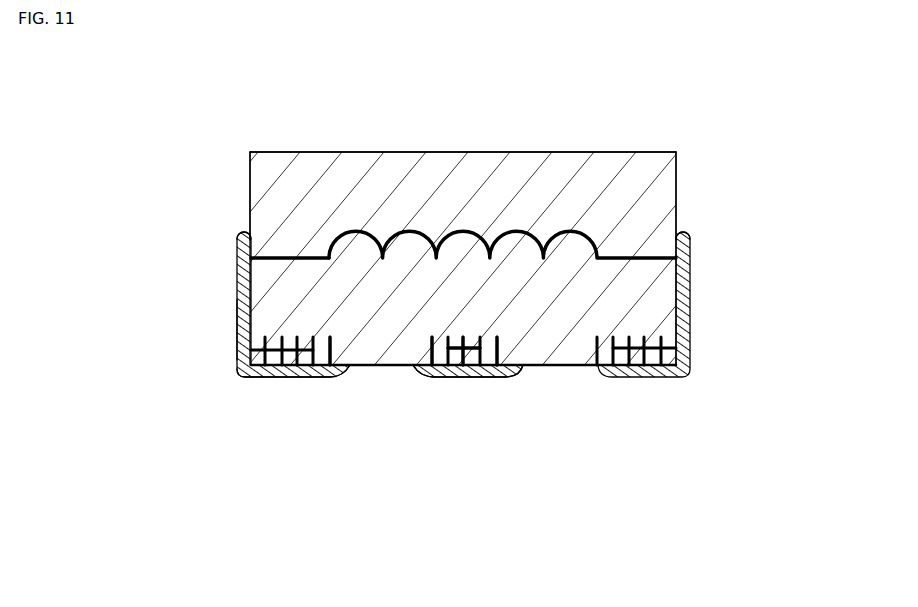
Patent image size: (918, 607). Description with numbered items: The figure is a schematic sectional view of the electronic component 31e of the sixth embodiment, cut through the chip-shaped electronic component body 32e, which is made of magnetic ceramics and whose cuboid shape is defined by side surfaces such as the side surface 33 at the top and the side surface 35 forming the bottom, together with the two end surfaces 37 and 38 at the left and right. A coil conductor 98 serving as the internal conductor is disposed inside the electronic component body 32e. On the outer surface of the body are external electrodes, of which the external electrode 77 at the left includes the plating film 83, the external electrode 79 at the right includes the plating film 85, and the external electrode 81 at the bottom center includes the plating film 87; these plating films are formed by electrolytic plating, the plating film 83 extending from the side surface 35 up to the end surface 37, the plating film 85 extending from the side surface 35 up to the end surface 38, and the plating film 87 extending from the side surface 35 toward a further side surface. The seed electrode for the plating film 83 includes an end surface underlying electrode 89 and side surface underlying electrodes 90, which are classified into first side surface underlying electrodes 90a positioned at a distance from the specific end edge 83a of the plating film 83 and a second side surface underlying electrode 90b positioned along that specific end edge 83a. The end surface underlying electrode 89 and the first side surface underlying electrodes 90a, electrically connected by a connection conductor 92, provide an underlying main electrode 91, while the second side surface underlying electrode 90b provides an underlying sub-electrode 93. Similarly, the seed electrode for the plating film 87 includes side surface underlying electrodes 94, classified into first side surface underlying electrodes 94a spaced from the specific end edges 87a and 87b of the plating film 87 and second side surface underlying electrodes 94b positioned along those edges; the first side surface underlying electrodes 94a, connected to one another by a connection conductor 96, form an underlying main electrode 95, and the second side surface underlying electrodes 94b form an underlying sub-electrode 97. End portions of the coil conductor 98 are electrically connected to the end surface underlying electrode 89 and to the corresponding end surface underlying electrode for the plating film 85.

The electronic component 31e is at (353, 66).
The electronic component body 32e is at (558, 150).
The side surface 33 is at (383, 152).
The side surface 35 is at (388, 368).
The end surface 37 is at (250, 176).
The end surface 38 is at (677, 172).
The external electrode 77 is at (237, 243).
The external electrode 79 is at (689, 240).
The external electrode 81 is at (457, 381).
The plating film 83 is at (243, 282).
The specific end edge 83a is at (332, 372).
The plating film 85 is at (689, 283).
The plating film 87 is at (482, 370).
The specific end edge 87a is at (418, 367).
The specific end edge 87b is at (503, 366).
The end surface underlying electrode 89 is at (239, 324).
The side surface underlying electrodes 90 is at (303, 441).
The first side surface underlying electrodes 90a is at (290, 362).
The second side surface underlying electrode 90b is at (346, 370).
The underlying main electrode 91 is at (268, 493).
The connection conductor 92 is at (290, 362).
The underlying sub-electrode 93 is at (355, 500).
The side surface underlying electrodes 94 is at (499, 333).
The first side surface underlying electrodes 94a is at (443, 366).
The second side surface underlying electrodes 94b is at (434, 366).
The underlying main electrode 95 is at (470, 432).
The connection conductor 96 is at (462, 340).
The underlying sub-electrode 97 is at (497, 427).
The coil conductor 98 is at (463, 231).